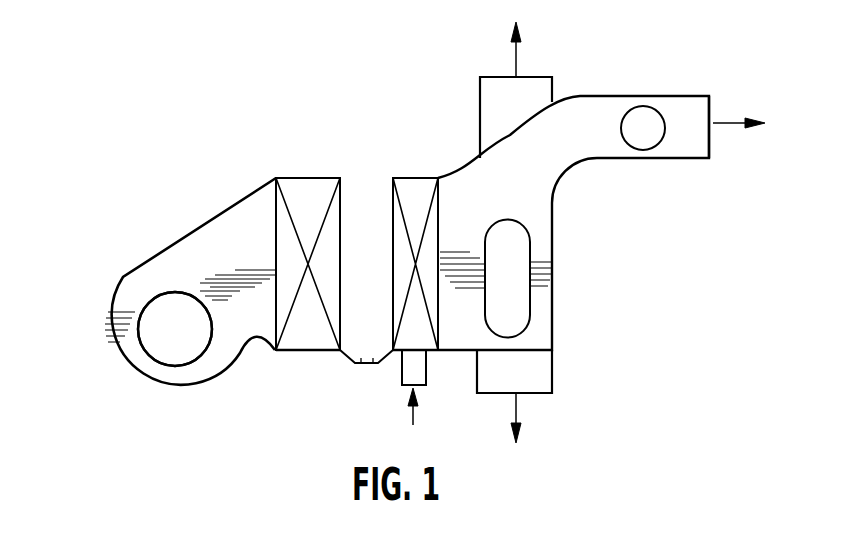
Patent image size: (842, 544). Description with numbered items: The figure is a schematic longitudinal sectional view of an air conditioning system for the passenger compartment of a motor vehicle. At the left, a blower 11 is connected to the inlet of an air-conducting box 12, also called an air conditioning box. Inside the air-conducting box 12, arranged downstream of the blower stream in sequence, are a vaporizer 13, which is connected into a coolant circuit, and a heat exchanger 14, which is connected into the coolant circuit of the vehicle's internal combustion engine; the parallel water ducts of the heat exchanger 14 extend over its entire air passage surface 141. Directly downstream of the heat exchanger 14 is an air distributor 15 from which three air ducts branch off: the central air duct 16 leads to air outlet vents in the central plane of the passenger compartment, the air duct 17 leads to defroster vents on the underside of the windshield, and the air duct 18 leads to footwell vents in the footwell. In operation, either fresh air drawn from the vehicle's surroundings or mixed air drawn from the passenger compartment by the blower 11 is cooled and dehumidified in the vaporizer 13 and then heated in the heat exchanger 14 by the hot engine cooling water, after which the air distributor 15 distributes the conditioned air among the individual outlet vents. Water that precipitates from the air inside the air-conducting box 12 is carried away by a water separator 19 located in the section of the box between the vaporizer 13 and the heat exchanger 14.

The blower 11 is at (160, 332).
The air-conducting box 12 is at (345, 168).
The vaporizer 13 is at (298, 190).
The heat exchanger 14 is at (420, 190).
The air passage surface 141 is at (395, 240).
The air distributor 15 is at (467, 320).
The central air duct 16 is at (698, 140).
The air duct 17 is at (530, 90).
The air duct 18 is at (535, 372).
The water separator 19 is at (365, 365).